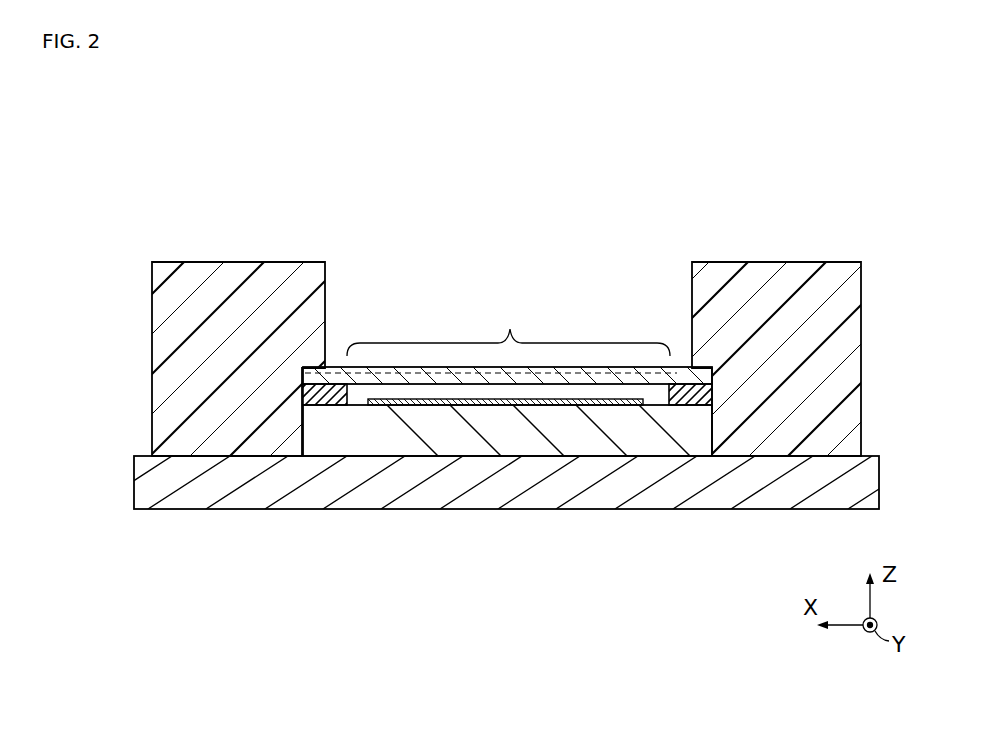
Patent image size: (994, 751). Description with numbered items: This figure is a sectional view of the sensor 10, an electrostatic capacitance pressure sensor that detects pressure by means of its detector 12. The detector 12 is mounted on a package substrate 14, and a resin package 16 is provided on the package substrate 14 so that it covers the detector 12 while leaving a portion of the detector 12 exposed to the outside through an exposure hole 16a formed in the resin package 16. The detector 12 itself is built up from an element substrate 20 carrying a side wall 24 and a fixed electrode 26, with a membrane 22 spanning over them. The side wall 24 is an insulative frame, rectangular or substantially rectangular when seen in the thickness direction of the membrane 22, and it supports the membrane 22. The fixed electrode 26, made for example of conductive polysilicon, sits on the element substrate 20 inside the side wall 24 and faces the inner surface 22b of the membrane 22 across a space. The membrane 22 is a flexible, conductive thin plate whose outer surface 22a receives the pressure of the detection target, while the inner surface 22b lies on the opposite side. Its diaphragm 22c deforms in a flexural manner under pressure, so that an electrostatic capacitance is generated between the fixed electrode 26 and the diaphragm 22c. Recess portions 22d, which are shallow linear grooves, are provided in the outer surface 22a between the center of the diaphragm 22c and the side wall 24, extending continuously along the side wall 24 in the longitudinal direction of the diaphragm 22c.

The sensor 10 is at (191, 227).
The detector 12 is at (508, 378).
The package substrate 14 is at (523, 500).
The resin package 16 is at (777, 279).
The exposure hole 16a is at (612, 275).
The element substrate 20 is at (523, 447).
The membrane 22 is at (491, 376).
The outer surface 22a is at (326, 365).
The inner surface 22b is at (323, 408).
The diaphragm 22c is at (508, 327).
The recess portions 22d is at (510, 368).
The side wall 24 is at (302, 391).
The fixed electrode 26 is at (615, 406).